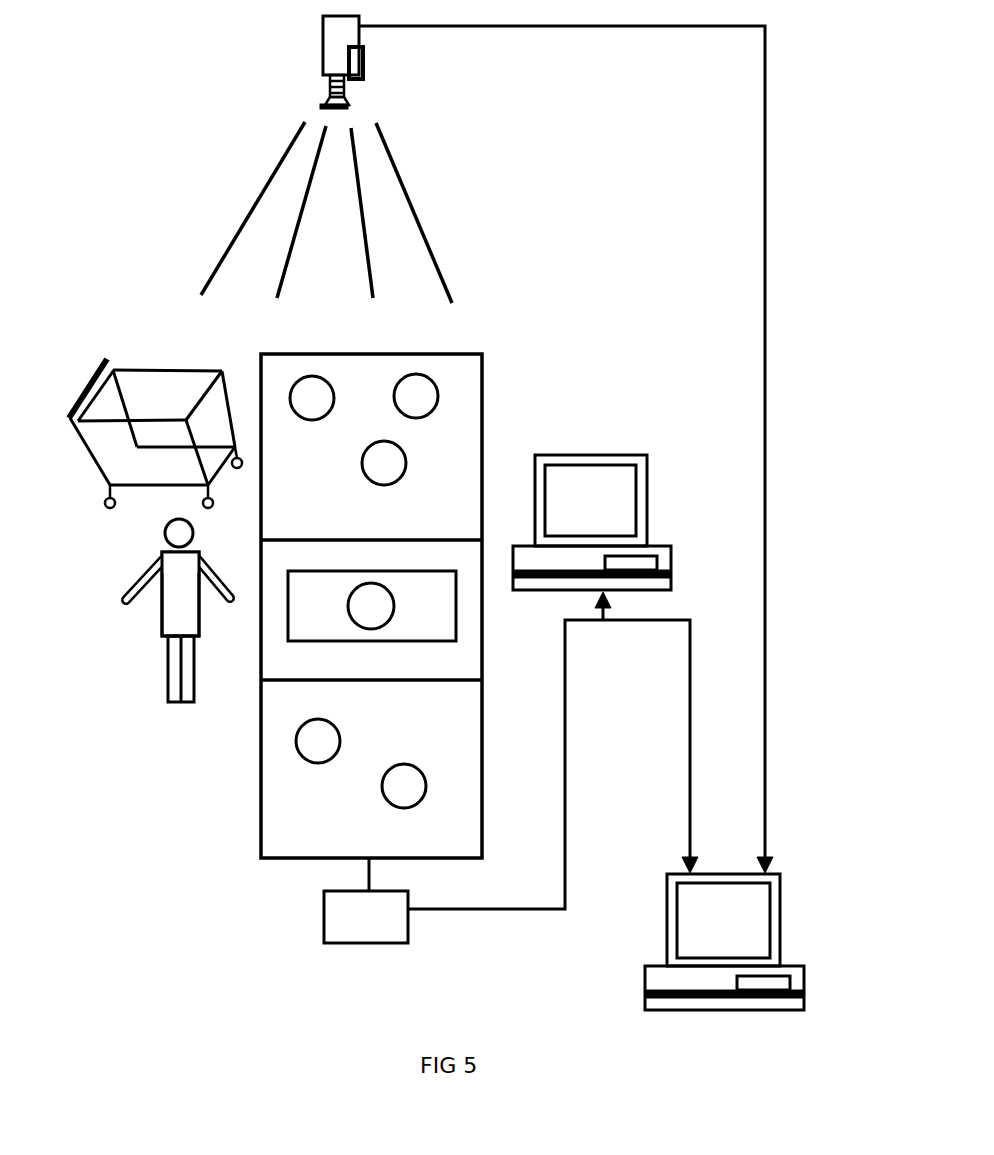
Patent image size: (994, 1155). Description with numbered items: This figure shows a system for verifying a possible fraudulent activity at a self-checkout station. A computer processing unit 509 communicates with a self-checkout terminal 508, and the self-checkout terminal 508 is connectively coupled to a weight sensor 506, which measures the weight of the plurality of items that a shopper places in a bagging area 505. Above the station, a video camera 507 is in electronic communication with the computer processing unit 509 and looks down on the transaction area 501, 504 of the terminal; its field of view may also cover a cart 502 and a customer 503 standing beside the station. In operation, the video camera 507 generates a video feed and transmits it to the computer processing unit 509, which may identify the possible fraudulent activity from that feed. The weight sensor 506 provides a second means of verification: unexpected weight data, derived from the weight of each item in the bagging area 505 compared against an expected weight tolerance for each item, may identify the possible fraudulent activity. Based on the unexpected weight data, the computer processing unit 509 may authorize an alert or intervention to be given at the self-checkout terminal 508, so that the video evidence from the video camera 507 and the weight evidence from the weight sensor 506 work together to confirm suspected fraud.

The transaction area 501 is at (371, 606).
The cart 502 is at (155, 420).
The customer 503 is at (165, 610).
The transaction area 504 is at (372, 606).
The bagging area 505 is at (361, 762).
The weight sensor 506 is at (366, 900).
The video camera 507 is at (326, 159).
The self-checkout terminal 508 is at (592, 522).
The computer processing unit 509 is at (724, 942).